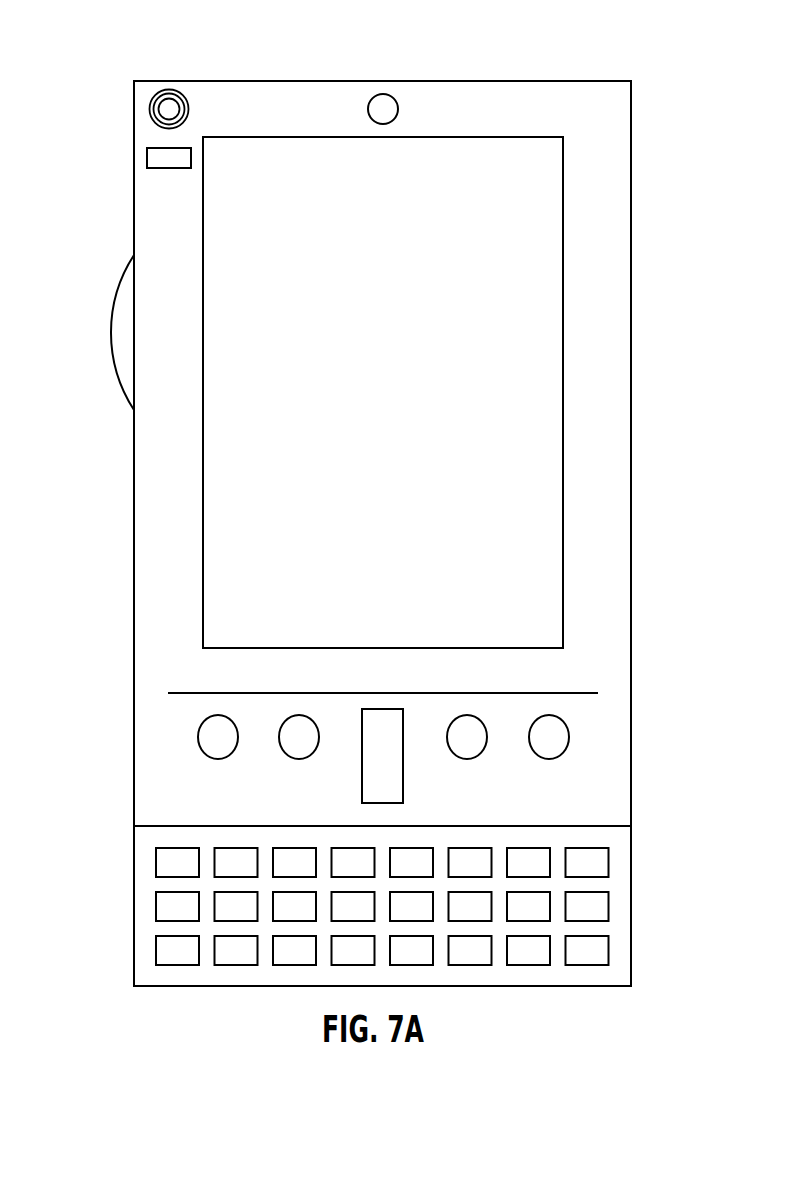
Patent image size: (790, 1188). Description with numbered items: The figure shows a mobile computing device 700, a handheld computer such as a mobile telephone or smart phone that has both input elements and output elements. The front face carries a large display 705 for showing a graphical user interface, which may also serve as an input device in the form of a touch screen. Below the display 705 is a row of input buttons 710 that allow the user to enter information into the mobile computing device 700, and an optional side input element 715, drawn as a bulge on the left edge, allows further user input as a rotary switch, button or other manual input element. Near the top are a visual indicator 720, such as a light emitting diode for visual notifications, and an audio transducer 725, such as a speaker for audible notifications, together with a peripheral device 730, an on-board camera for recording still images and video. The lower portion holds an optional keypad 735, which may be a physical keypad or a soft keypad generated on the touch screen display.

The mobile computing device 700 is at (613, 95).
The display 705 is at (318, 523).
The input buttons 710 is at (218, 737).
The side input element 715 is at (111, 330).
The visual indicator 720 is at (147, 158).
The audio transducer 725 is at (149, 112).
The peripheral device 730 is at (383, 94).
The keypad 735 is at (140, 952).